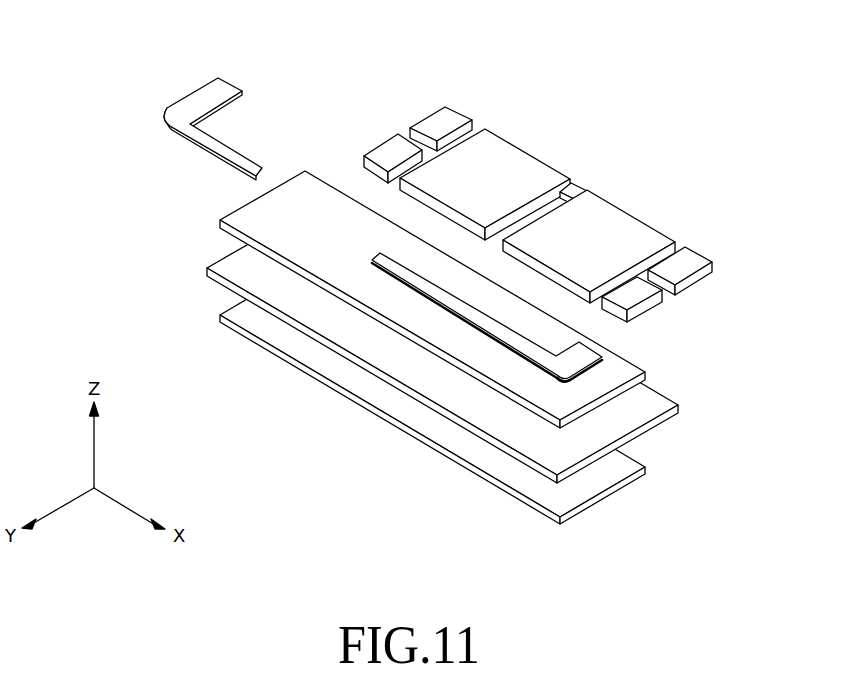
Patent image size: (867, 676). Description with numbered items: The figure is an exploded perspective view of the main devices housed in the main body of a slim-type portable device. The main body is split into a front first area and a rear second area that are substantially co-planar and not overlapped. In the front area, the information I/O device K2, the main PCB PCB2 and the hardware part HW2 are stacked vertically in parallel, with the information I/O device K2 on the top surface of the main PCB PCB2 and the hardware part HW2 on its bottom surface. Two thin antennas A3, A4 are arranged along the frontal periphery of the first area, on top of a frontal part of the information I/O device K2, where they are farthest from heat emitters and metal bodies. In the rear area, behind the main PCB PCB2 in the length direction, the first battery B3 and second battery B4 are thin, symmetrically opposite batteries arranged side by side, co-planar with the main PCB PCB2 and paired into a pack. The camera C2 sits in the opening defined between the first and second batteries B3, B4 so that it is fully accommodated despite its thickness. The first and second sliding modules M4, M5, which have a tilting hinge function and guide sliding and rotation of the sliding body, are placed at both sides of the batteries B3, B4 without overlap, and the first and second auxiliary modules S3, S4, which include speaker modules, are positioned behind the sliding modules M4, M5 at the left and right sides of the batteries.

The antenna A3 is at (190, 103).
The first sliding module M4 is at (388, 150).
The first auxiliary module S3 is at (452, 120).
The first battery B3 is at (525, 158).
The camera C2 is at (573, 187).
The second battery B4 is at (627, 223).
The second auxiliary module S4 is at (678, 270).
The second sliding module M5 is at (635, 298).
The antenna A4 is at (590, 357).
The information I/O device K2 is at (248, 218).
The main PCB PCB2 is at (243, 277).
The hardware part HW2 is at (288, 343).